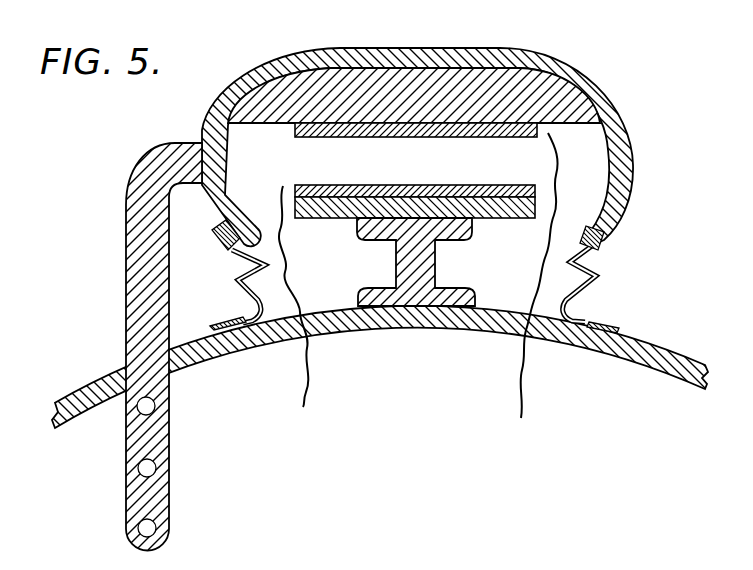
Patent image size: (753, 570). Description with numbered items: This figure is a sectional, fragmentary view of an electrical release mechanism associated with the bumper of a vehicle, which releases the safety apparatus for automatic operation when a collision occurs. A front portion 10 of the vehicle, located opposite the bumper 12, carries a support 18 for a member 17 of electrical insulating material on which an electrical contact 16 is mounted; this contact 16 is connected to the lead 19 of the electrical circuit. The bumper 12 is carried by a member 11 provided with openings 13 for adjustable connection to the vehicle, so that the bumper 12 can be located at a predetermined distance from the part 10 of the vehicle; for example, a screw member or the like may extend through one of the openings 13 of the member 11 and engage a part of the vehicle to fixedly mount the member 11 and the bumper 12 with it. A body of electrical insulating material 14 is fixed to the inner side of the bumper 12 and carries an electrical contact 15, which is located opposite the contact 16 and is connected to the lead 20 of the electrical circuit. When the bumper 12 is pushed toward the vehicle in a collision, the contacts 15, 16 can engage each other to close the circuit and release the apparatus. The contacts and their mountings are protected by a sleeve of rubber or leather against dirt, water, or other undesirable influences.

The front portion of the vehicle 10 is at (604, 343).
The member 11 is at (150, 276).
The bumper 12 is at (622, 176).
The openings 13 is at (148, 408).
The body of electrical insulating material 14 is at (545, 95).
The electrical contact 15 is at (320, 134).
The electrical contact 16 is at (323, 194).
The member of electrical insulating material 17 is at (490, 215).
The support 18 is at (413, 286).
The lead 19 is at (303, 406).
The lead 20 is at (520, 414).